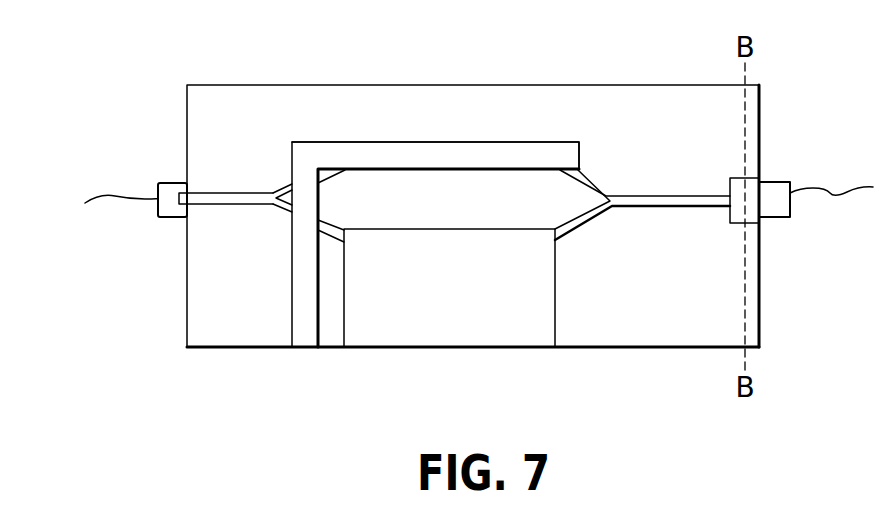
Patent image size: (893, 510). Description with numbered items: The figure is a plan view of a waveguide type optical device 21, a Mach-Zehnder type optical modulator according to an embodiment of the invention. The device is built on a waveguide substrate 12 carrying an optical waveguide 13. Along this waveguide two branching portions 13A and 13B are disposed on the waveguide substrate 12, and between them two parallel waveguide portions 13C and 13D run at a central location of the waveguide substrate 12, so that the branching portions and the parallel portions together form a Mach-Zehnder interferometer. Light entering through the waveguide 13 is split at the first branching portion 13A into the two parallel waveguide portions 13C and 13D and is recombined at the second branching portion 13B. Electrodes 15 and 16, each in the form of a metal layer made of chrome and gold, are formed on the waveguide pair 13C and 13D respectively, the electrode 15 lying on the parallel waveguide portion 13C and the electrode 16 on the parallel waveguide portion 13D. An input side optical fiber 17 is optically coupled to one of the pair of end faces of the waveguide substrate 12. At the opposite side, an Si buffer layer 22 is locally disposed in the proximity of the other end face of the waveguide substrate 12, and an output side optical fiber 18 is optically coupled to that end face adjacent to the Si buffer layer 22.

The waveguide substrate 12 is at (222, 102).
The waveguide 13 is at (238, 208).
The branching portion 13A is at (288, 188).
The branching portion 13B is at (598, 182).
The parallel waveguide portion 13C is at (353, 141).
The parallel waveguide portion 13D is at (375, 228).
The electrode 15 is at (545, 150).
The electrode 16 is at (442, 350).
The input side optical fiber 17 is at (167, 182).
The output side optical fiber 18 is at (773, 180).
The waveguide type optical device 21 is at (783, 62).
The Si buffer layer 22 is at (748, 223).